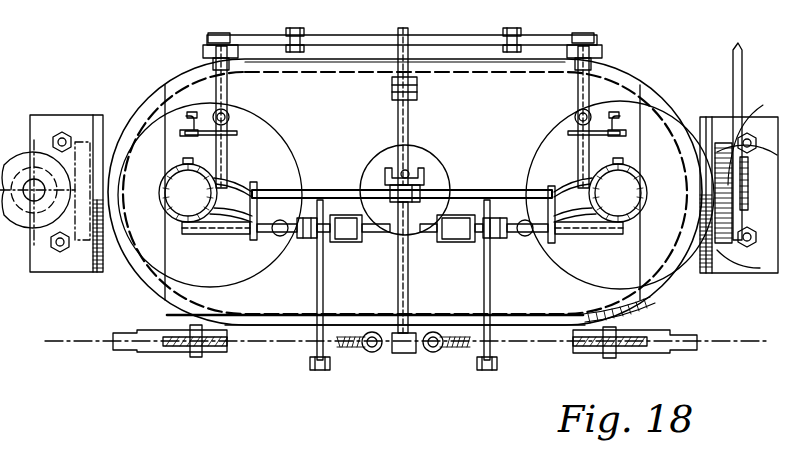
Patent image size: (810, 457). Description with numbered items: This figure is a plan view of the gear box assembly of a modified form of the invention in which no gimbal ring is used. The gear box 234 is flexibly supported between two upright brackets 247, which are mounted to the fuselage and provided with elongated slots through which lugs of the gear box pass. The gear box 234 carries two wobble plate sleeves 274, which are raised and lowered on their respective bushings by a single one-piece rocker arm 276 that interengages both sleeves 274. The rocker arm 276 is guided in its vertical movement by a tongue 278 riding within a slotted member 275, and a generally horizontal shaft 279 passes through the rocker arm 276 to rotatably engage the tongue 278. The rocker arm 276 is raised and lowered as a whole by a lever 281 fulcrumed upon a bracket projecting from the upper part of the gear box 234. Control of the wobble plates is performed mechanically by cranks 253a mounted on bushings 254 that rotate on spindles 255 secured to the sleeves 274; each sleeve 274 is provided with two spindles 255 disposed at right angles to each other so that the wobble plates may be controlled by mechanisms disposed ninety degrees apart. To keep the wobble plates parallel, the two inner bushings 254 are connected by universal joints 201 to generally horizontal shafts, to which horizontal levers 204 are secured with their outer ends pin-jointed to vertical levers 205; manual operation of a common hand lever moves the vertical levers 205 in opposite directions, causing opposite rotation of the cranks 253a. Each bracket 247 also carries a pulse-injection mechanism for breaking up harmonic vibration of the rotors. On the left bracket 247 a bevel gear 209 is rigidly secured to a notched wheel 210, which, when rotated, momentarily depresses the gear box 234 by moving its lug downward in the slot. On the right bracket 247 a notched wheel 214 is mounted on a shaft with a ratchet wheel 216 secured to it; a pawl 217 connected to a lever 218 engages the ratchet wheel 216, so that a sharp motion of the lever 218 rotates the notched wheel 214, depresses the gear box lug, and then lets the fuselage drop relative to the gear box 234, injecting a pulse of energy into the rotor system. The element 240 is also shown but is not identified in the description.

The universal joint 201 is at (281, 240).
The horizontal lever 204 is at (324, 297).
The vertical lever 205 is at (328, 372).
The bevel gear 209 is at (50, 272).
The notched wheel 210 is at (80, 273).
The notched wheel 214 is at (761, 140).
The ratchet wheel 216 is at (747, 250).
The pawl 217 is at (750, 160).
The lever 218 is at (743, 84).
The gear box 234 is at (252, 332).
The adjusting bolt 240 is at (225, 351).
The upright bracket 247 is at (33, 272).
The crank 253a is at (263, 217).
The bushing 254 is at (580, 190).
The spindle 255 is at (197, 237).
The wobble plate sleeve 274 is at (646, 182).
The slotted member 275 is at (424, 182).
The rocker arm 276 is at (300, 190).
The tongue 278 is at (422, 165).
The horizontal shaft 279 is at (412, 270).
The lever 281 is at (410, 122).